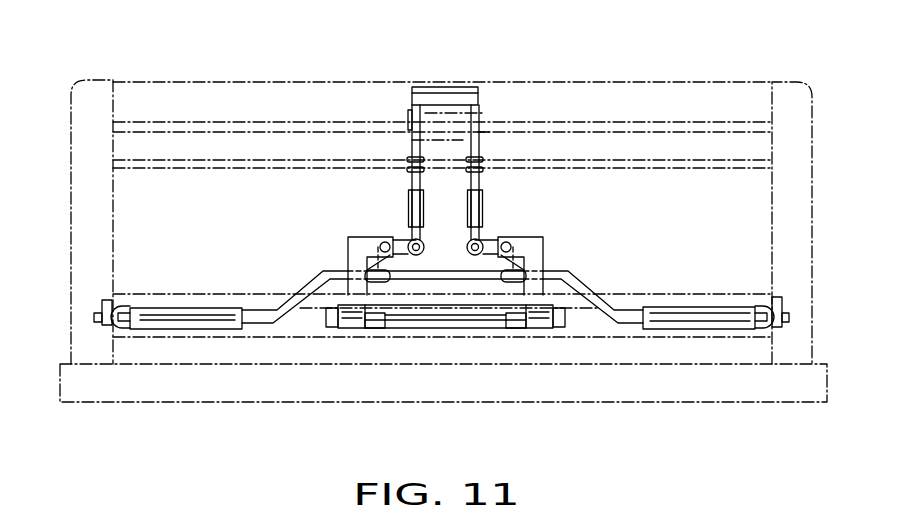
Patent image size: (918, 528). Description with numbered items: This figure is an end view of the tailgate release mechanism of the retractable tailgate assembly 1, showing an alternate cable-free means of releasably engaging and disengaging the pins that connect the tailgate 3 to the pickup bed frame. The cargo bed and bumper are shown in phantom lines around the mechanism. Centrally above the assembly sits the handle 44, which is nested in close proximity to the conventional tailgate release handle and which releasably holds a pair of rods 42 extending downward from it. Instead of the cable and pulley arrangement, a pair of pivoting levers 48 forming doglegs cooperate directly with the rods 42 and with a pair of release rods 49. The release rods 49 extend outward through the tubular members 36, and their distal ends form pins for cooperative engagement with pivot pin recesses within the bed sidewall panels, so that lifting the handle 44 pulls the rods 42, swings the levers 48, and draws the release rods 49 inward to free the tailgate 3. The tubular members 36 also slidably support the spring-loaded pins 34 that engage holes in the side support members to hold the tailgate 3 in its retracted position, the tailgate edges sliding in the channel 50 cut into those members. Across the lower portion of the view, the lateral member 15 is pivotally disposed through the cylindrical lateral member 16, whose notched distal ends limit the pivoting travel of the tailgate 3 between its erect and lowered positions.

The retractable tailgate assembly 1 is at (122, 70).
The tailgate 3 is at (731, 97).
The lateral member 15 is at (331, 329).
The lateral member 16 is at (448, 330).
The spring-loaded pins 34 is at (787, 318).
The tubular member 36 is at (697, 330).
The rods 42 is at (481, 133).
The handle 44 is at (440, 93).
The pivoting levers 48 is at (487, 238).
The release rods 49 is at (581, 286).
The channel 50 is at (762, 307).